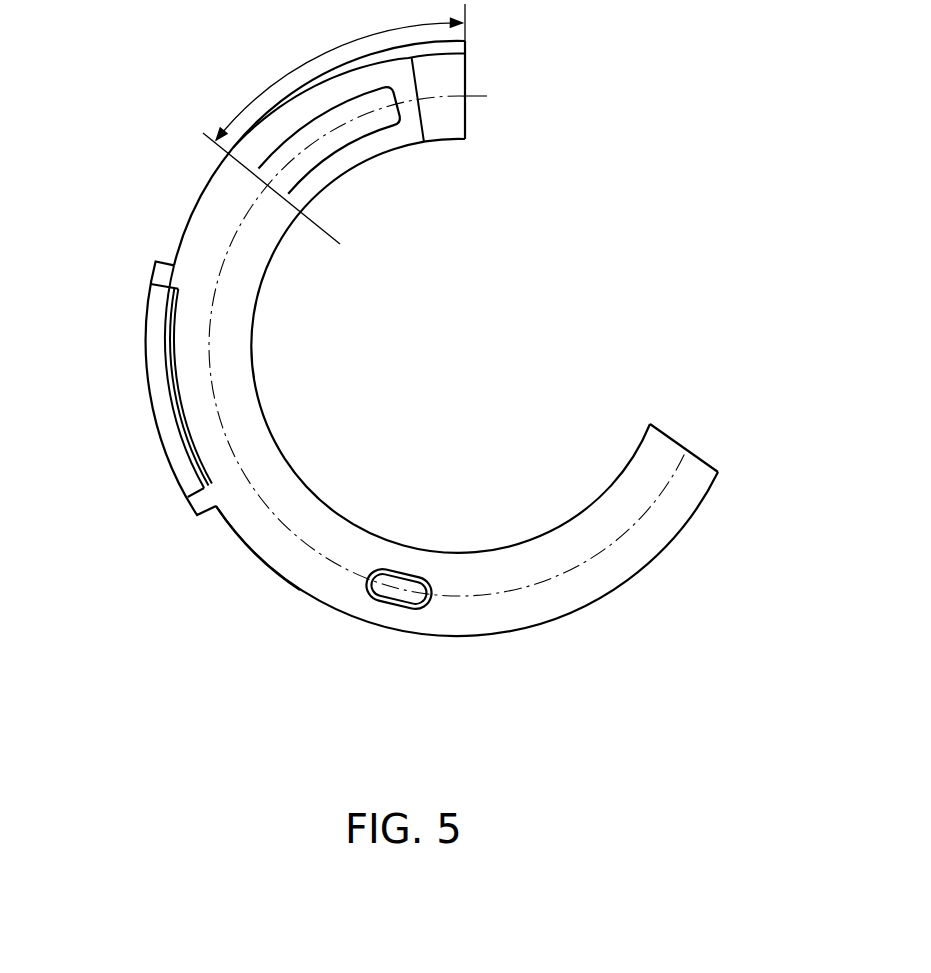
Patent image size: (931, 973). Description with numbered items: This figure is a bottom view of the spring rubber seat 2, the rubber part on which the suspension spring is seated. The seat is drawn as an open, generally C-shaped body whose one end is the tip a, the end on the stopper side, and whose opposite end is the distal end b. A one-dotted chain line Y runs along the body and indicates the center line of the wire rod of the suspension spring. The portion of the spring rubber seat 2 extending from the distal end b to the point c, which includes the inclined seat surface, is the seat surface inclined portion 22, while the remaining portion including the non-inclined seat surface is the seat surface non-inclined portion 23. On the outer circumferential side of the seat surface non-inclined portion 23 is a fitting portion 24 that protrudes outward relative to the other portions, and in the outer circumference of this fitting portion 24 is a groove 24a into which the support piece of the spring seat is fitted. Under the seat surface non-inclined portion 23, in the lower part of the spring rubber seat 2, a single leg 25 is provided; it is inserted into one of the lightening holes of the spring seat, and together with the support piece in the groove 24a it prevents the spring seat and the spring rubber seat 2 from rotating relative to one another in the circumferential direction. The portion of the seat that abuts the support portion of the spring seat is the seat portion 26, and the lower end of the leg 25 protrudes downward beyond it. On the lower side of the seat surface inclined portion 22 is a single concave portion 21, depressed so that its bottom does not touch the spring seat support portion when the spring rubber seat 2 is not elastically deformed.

The spring rubber seat 2 is at (722, 518).
The concave portion 21 is at (333, 147).
The seat surface inclined portion 22 is at (303, 76).
The seat surface non-inclined portion 23 is at (228, 552).
The fitting portion 24 is at (136, 297).
The groove 24a is at (162, 383).
The leg 25 is at (393, 582).
The seat portion 26 is at (233, 400).
The tip a is at (690, 451).
The distal end b is at (465, 75).
The boundary of seat surface inclined portion c is at (259, 175).
The center line of the wire rod Y is at (488, 96).